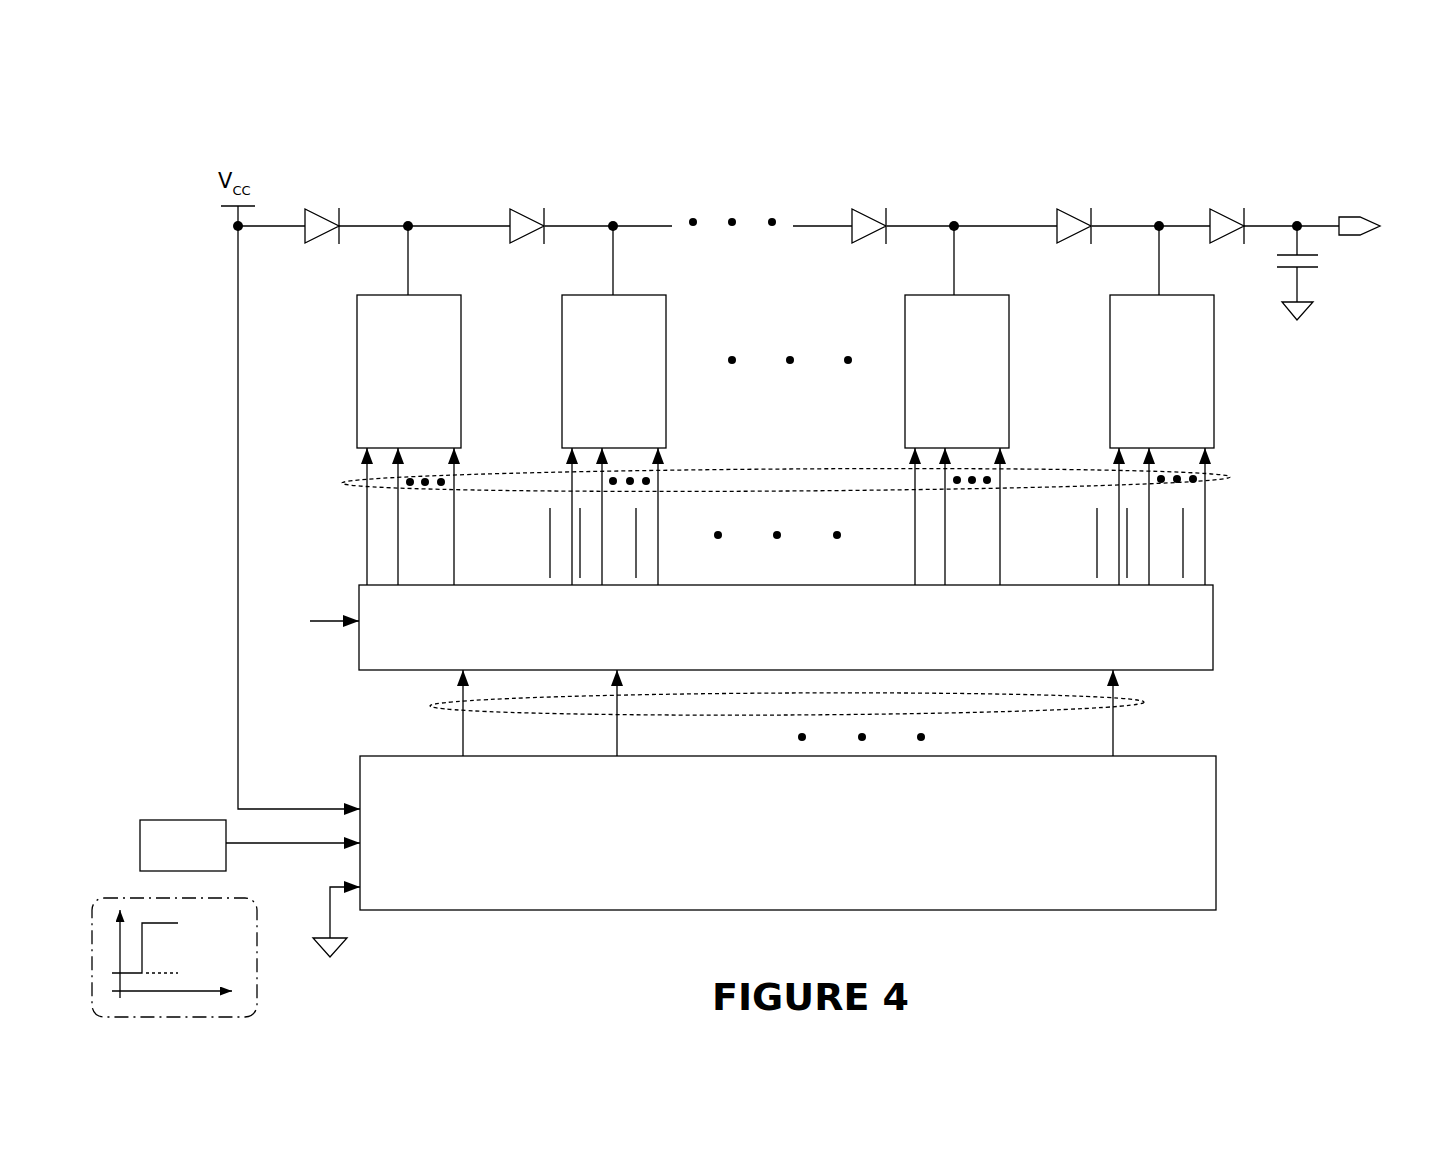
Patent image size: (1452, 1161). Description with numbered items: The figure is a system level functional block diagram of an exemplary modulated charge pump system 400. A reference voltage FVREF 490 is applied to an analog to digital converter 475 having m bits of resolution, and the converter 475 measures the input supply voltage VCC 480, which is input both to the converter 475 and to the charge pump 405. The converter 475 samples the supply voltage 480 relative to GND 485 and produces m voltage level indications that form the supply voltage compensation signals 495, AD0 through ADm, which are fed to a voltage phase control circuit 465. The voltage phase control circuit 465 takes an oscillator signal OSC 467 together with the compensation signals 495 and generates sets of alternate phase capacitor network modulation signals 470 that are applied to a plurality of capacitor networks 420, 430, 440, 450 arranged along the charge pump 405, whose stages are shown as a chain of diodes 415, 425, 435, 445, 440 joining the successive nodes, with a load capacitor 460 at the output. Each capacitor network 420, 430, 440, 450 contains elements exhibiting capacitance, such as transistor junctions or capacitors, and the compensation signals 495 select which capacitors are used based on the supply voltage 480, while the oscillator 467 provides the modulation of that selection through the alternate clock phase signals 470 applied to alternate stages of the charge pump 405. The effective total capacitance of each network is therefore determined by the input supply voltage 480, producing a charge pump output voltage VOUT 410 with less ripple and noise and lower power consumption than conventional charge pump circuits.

The modulated charge pump system 400 is at (1312, 978).
The charge pump 405 is at (681, 176).
The charge pump output voltage VOUT 410 is at (1322, 218).
The first diode 415 is at (328, 256).
The capacitor network 420 is at (461, 385).
The second diode 425 is at (533, 256).
The capacitor network 430 is at (666, 385).
The diode n-1 435 is at (874, 256).
The capacitor network 440 is at (1227, 190).
The diode n 445 is at (1079, 256).
The capacitor network 450 is at (1214, 385).
The load capacitor 460 is at (1326, 290).
The voltage phase control circuit 465 is at (1213, 632).
The oscillator signal OSC 467 is at (325, 621).
The capacitor network modulation signals 470 is at (1230, 477).
The analog to digital converter 475 is at (1216, 842).
The input supply voltage VCC 480 is at (242, 755).
The GND 485 is at (330, 905).
The reference voltage FVREF 490 is at (330, 843).
The supply voltage compensation signals 495 is at (1145, 702).